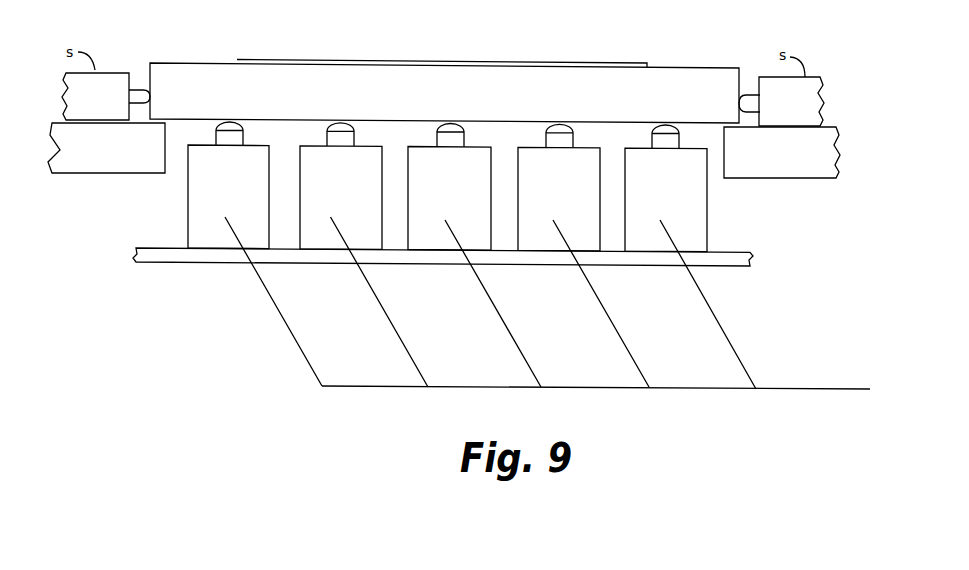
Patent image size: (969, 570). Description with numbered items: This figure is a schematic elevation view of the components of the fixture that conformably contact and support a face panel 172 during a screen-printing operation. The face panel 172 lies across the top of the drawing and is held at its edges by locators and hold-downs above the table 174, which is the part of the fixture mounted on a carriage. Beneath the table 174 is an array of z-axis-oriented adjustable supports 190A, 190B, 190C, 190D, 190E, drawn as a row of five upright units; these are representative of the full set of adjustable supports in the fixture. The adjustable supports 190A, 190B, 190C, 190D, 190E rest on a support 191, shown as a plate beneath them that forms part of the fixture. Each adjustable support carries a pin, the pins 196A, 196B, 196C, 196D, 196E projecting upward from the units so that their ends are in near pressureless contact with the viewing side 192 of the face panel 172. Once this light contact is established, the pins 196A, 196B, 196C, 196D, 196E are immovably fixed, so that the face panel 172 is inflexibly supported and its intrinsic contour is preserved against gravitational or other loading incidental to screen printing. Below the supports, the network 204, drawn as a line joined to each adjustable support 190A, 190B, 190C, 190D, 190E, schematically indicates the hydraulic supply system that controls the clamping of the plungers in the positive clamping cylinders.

The face panel 172 is at (203, 64).
The table 174 is at (838, 145).
The adjustable support 190A is at (211, 237).
The adjustable support 190B is at (330, 237).
The adjustable support 190C is at (448, 238).
The adjustable support 190D is at (550, 238).
The adjustable support 190E is at (659, 238).
The support 191 is at (730, 250).
The viewing side 192 is at (180, 132).
The pin 196A is at (244, 138).
The pin 196B is at (355, 139).
The pin 196C is at (465, 140).
The pin 196D is at (574, 140).
The pin 196E is at (680, 142).
The network 204 is at (717, 389).